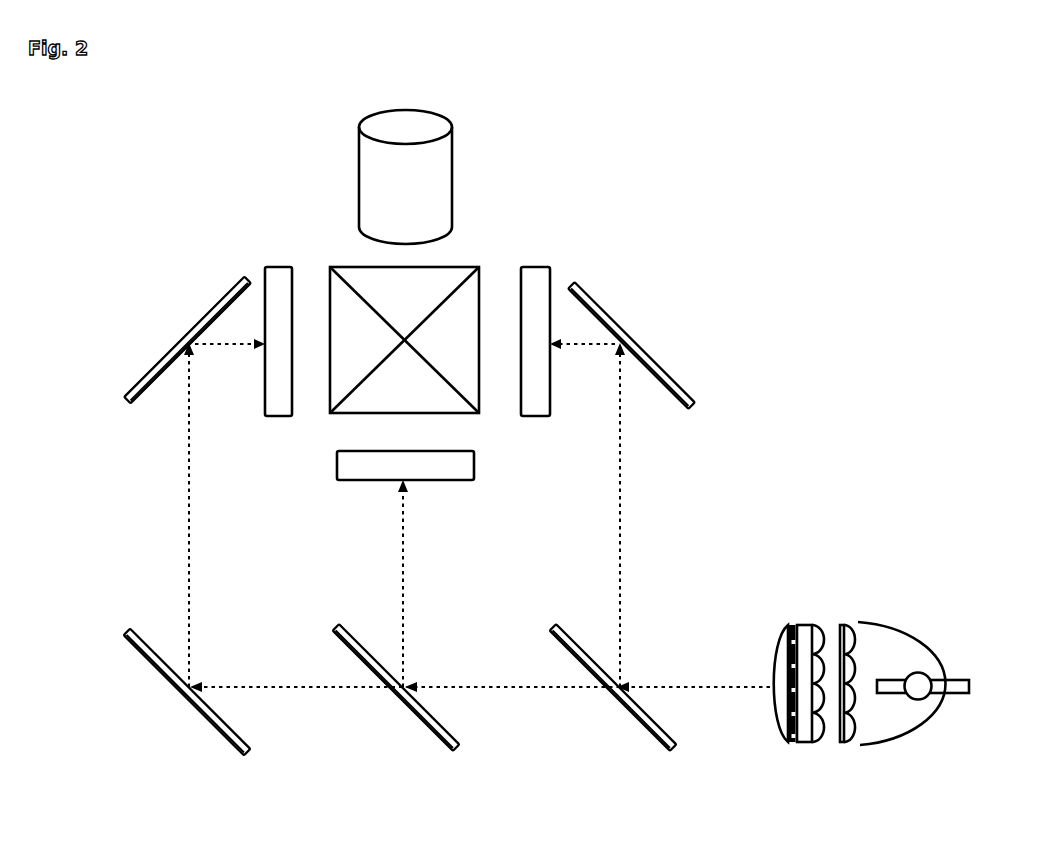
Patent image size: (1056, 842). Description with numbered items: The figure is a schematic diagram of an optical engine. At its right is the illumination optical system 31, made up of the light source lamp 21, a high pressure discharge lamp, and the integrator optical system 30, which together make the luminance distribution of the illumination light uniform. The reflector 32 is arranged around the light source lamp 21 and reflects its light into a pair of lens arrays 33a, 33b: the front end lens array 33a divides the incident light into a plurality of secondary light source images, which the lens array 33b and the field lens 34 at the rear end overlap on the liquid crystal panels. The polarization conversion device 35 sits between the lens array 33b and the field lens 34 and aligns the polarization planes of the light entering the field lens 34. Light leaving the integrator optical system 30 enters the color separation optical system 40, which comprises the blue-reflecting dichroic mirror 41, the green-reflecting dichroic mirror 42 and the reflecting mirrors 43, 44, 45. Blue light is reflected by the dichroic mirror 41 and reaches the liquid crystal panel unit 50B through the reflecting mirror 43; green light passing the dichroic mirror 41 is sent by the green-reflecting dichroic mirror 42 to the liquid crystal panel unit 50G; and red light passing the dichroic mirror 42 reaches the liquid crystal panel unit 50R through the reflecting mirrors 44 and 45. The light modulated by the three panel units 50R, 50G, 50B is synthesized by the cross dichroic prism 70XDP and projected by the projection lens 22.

The projection lens 22 is at (452, 170).
The cross dichroic prism 70XDP is at (479, 413).
The liquid crystal panel unit 50R is at (278, 267).
The liquid crystal panel unit 50G is at (455, 480).
The liquid crystal panel unit 50B is at (538, 267).
The color separation optical system 40 is at (110, 448).
The blue-reflecting dichroic mirror 41 is at (635, 719).
The green-reflecting dichroic mirror 42 is at (425, 726).
The reflecting mirror 43 is at (650, 355).
The reflecting mirror 44 is at (218, 729).
The reflecting mirror 45 is at (165, 352).
The integrator optical system 30 is at (828, 580).
The illumination optical system 31 is at (753, 755).
The light source lamp 21 is at (925, 658).
The reflector 32 is at (950, 650).
The front end lens array 33a is at (850, 625).
The lens array 33b is at (805, 625).
The field lens 34 is at (775, 646).
The polarization conversion device 35 is at (790, 625).